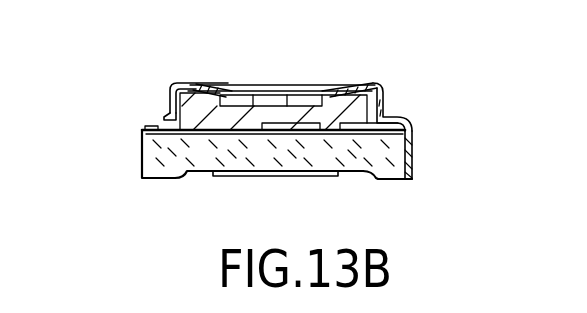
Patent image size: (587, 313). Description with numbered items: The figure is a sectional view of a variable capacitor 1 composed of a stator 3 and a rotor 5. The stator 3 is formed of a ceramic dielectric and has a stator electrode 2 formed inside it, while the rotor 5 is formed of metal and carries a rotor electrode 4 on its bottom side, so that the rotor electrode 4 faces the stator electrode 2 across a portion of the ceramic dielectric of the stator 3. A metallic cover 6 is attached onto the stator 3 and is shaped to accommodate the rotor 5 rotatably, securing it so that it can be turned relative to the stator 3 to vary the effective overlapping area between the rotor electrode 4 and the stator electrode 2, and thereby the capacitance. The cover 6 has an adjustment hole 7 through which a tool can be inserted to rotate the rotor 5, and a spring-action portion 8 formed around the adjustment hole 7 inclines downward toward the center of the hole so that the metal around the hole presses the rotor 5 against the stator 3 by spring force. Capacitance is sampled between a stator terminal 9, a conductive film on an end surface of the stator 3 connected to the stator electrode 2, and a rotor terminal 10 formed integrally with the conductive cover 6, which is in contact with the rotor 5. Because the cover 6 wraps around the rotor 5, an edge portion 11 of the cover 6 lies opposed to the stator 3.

The variable capacitor 1 is at (118, 61).
The stator electrode 2 is at (206, 131).
The stator 3 is at (374, 186).
The rotor electrode 4 is at (235, 130).
The rotor 5 is at (270, 100).
The cover 6 is at (386, 80).
The adjustment hole 7 is at (322, 92).
The spring-action portion 8 is at (200, 83).
The stator terminal 9 is at (141, 153).
The rotor terminal 10 is at (413, 151).
The edge portion 11 is at (165, 115).